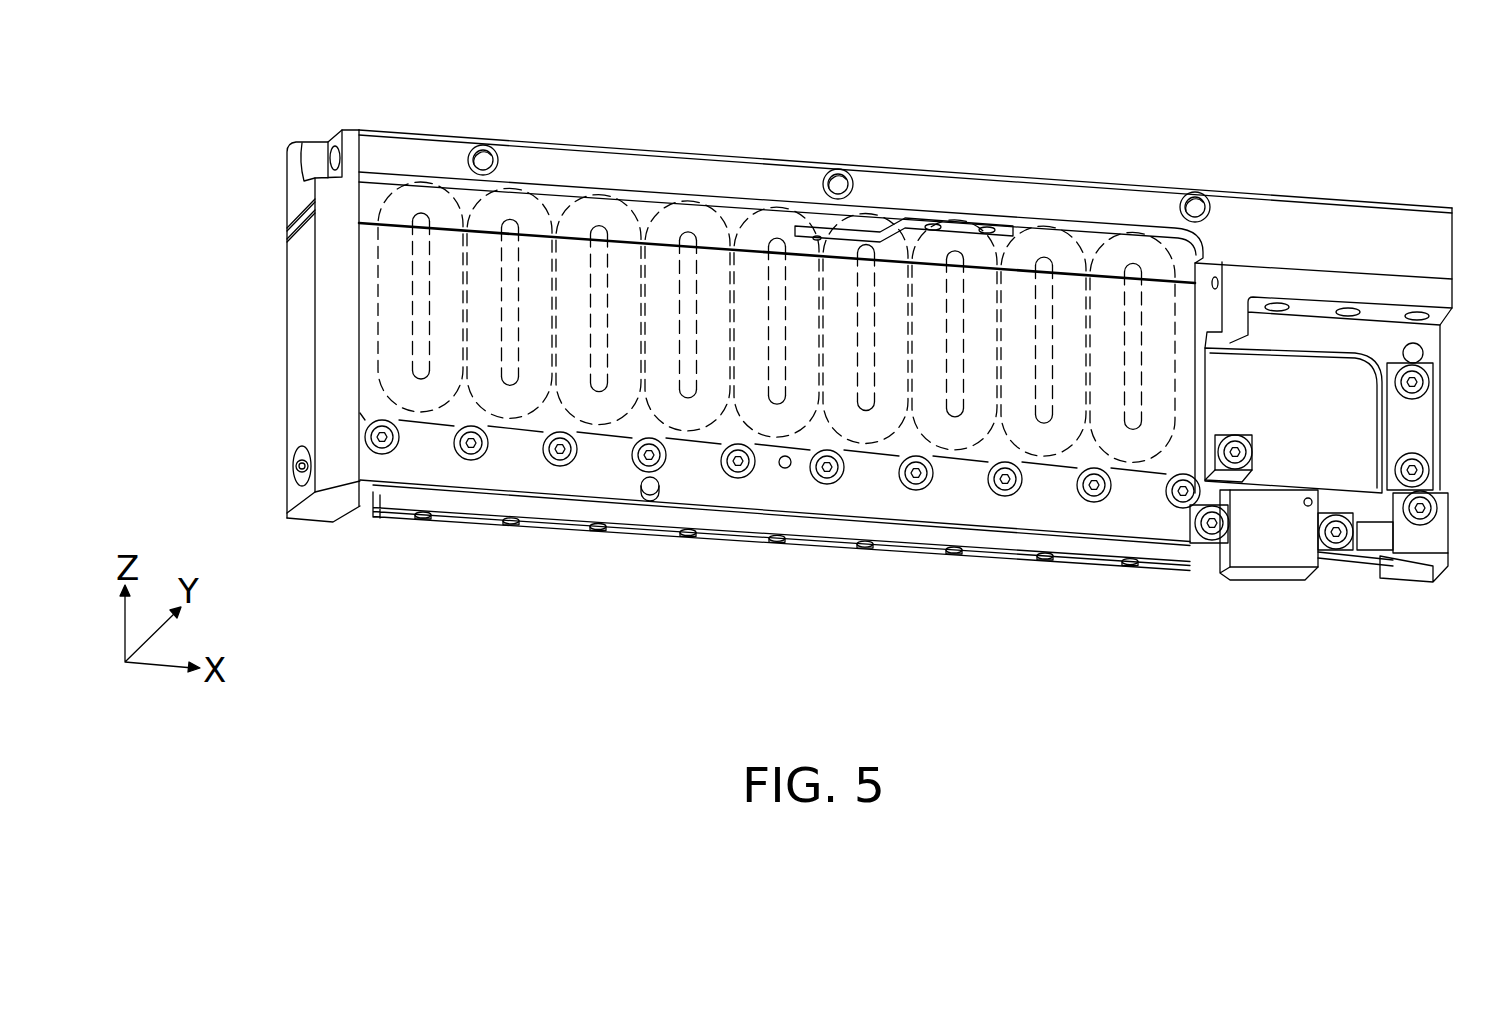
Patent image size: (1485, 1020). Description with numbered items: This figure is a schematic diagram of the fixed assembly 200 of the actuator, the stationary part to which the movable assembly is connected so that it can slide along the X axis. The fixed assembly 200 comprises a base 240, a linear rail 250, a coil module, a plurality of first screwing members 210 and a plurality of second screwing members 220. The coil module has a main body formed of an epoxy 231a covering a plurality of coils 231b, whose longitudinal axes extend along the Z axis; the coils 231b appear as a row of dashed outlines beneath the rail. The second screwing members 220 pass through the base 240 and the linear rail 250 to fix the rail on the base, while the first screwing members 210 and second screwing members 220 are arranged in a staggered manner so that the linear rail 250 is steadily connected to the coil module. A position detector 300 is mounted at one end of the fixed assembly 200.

The fixed assembly 200 is at (293, 140).
The first screwing member 210 is at (560, 466).
The second screwing member 220 is at (510, 524).
The epoxy 231a is at (387, 404).
The coil 231b is at (1130, 245).
The base 240 is at (822, 503).
The linear rail 250 is at (998, 540).
The position detector 300 is at (1272, 535).